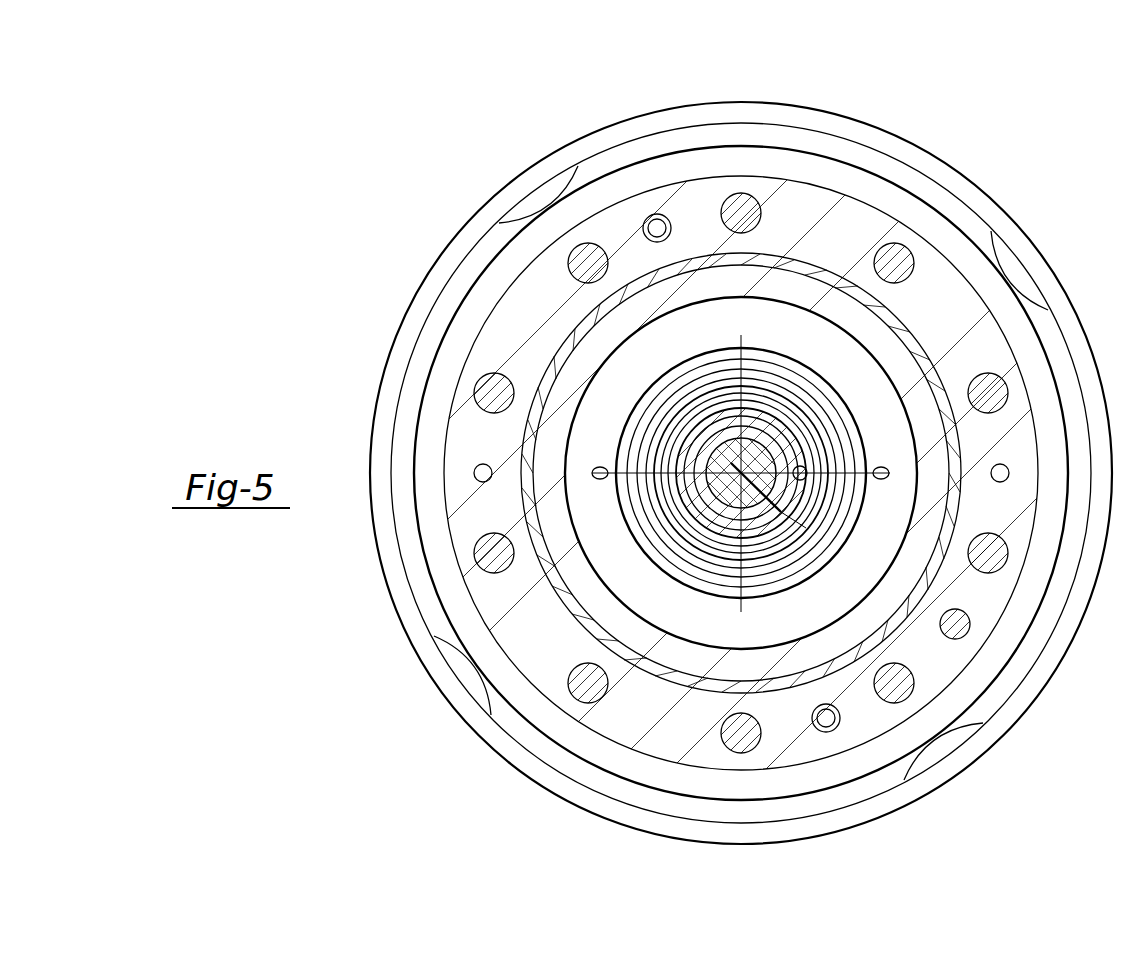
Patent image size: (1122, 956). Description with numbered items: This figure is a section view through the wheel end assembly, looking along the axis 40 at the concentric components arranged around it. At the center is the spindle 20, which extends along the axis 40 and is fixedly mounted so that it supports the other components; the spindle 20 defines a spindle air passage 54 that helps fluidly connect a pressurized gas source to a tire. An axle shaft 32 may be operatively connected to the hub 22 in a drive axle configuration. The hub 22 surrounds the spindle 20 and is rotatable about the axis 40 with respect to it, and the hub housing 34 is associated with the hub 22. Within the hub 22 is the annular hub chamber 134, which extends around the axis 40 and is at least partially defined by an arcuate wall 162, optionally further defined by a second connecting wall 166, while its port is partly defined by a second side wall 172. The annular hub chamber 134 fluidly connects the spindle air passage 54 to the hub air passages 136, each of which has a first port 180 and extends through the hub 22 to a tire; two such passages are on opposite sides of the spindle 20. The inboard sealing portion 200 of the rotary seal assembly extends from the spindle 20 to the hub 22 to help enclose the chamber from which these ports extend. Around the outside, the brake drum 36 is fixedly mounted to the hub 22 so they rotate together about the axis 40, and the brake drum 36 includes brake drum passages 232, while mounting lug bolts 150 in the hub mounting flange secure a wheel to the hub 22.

The brake drum 36 is at (742, 102).
The mounting lug bolt 150 is at (877, 258).
The brake drum passage 232 is at (487, 464).
The hub 22 is at (884, 370).
The hub housing 34 is at (843, 322).
The annular hub chamber 134 is at (741, 487).
The arcuate wall 162 is at (708, 640).
The hub air passage 136 is at (739, 494).
The first port 180 is at (598, 480).
The second connecting wall 166 is at (770, 368).
The second side wall 172 is at (720, 380).
The inboard sealing portion 200 is at (710, 560).
The spindle 20 is at (702, 530).
The axle shaft 32 is at (715, 452).
The axis 40 is at (787, 517).
The spindle air passage 54 is at (799, 466).